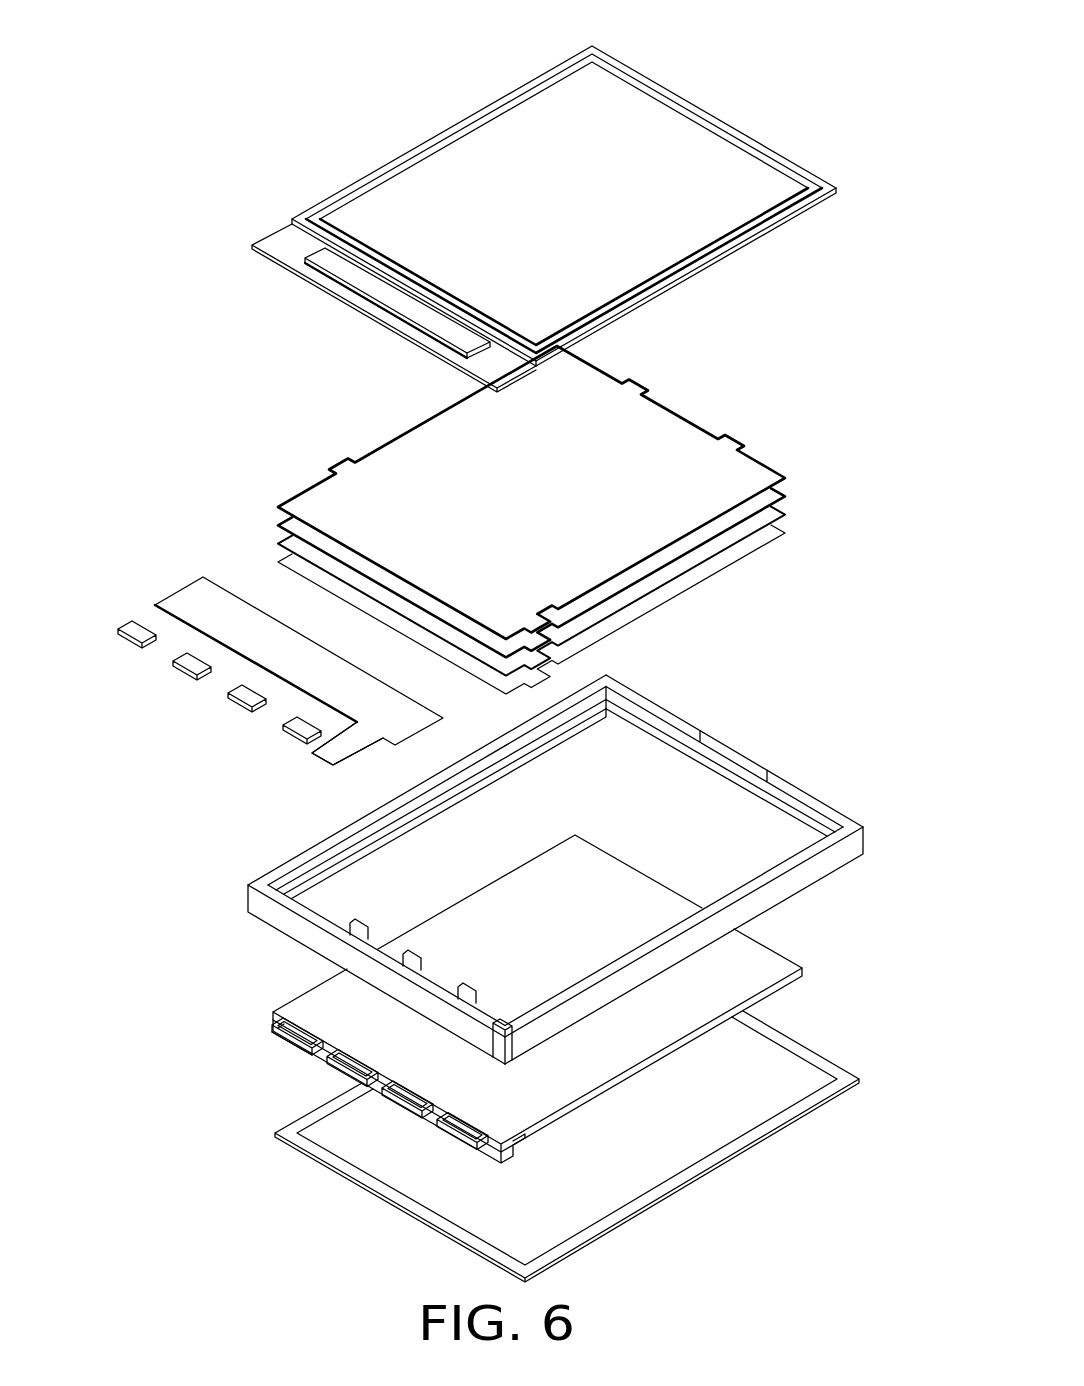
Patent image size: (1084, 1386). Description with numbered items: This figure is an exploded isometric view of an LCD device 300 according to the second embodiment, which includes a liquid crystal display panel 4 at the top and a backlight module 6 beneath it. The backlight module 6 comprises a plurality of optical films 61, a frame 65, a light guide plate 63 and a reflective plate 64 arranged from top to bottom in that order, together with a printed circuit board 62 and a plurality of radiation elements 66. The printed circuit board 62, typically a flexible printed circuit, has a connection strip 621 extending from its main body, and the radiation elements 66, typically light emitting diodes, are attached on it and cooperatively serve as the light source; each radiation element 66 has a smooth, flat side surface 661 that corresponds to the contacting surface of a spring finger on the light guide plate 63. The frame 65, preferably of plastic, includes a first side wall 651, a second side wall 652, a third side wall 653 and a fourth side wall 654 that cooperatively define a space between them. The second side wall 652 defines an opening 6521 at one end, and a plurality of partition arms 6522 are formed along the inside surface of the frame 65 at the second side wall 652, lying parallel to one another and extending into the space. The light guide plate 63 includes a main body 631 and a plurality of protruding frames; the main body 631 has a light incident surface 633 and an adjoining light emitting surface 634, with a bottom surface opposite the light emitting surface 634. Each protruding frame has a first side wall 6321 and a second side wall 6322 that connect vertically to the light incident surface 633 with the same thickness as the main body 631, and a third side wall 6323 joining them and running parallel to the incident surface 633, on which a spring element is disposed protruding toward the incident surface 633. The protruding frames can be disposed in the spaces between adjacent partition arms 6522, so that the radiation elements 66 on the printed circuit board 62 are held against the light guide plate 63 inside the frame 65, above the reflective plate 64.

The LCD device 300 is at (488, 641).
The liquid crystal display panel 4 is at (707, 169).
The backlight module 6 is at (880, 432).
The optical films 61 is at (797, 457).
The printed circuit board 62 is at (217, 600).
The connection strip 621 is at (327, 752).
The radiation elements 66 is at (189, 679).
The side surface 661 is at (117, 630).
The frame 65 is at (525, 969).
The first side wall 651 is at (786, 888).
The second side wall 652 is at (286, 903).
The opening 6521 is at (478, 1026).
The partition arms 6522 is at (308, 953).
The third side wall 653 is at (297, 875).
The fourth side wall 654 is at (670, 715).
The light guide plate 63 is at (526, 999).
The main body 631 is at (633, 866).
The first side wall 6321 is at (320, 1050).
The second side wall 6322 is at (293, 1035).
The third side wall 6323 is at (297, 1047).
The light incident surface 633 is at (293, 1002).
The light emitting surface 634 is at (753, 964).
The reflective plate 64 is at (778, 1063).